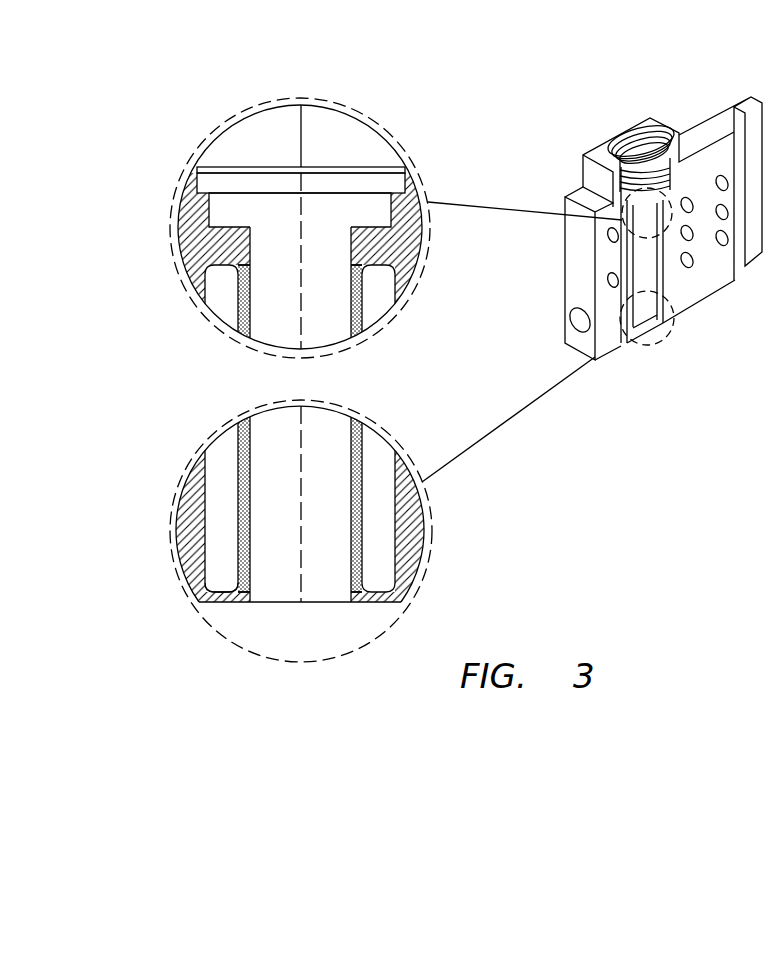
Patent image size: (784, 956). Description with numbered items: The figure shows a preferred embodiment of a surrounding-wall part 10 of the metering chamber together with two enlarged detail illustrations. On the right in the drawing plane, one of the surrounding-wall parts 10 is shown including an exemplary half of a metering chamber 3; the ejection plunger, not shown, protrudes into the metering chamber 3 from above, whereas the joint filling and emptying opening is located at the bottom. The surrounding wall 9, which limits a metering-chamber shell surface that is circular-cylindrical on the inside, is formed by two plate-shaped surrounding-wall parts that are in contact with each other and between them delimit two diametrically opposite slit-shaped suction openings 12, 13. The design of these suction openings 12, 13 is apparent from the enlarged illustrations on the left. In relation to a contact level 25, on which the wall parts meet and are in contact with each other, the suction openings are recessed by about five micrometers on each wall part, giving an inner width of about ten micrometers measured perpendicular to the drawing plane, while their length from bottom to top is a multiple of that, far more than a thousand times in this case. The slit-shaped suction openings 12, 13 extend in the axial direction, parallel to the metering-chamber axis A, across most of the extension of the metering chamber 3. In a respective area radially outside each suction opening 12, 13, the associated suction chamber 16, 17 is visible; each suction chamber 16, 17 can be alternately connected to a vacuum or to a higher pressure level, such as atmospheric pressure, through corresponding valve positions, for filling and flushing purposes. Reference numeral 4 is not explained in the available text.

The surrounding-wall part 10 is at (695, 135).
The metering chamber 3 is at (331, 307).
The bore outlet 4 is at (273, 603).
The surrounding wall 9 is at (370, 258).
The suction opening 12 is at (236, 327).
The suction opening 13 is at (362, 316).
The suction chamber 16 is at (223, 573).
The suction chamber 17 is at (223, 293).
The contact level 25 is at (192, 270).
The metering-chamber axis A is at (300, 128).